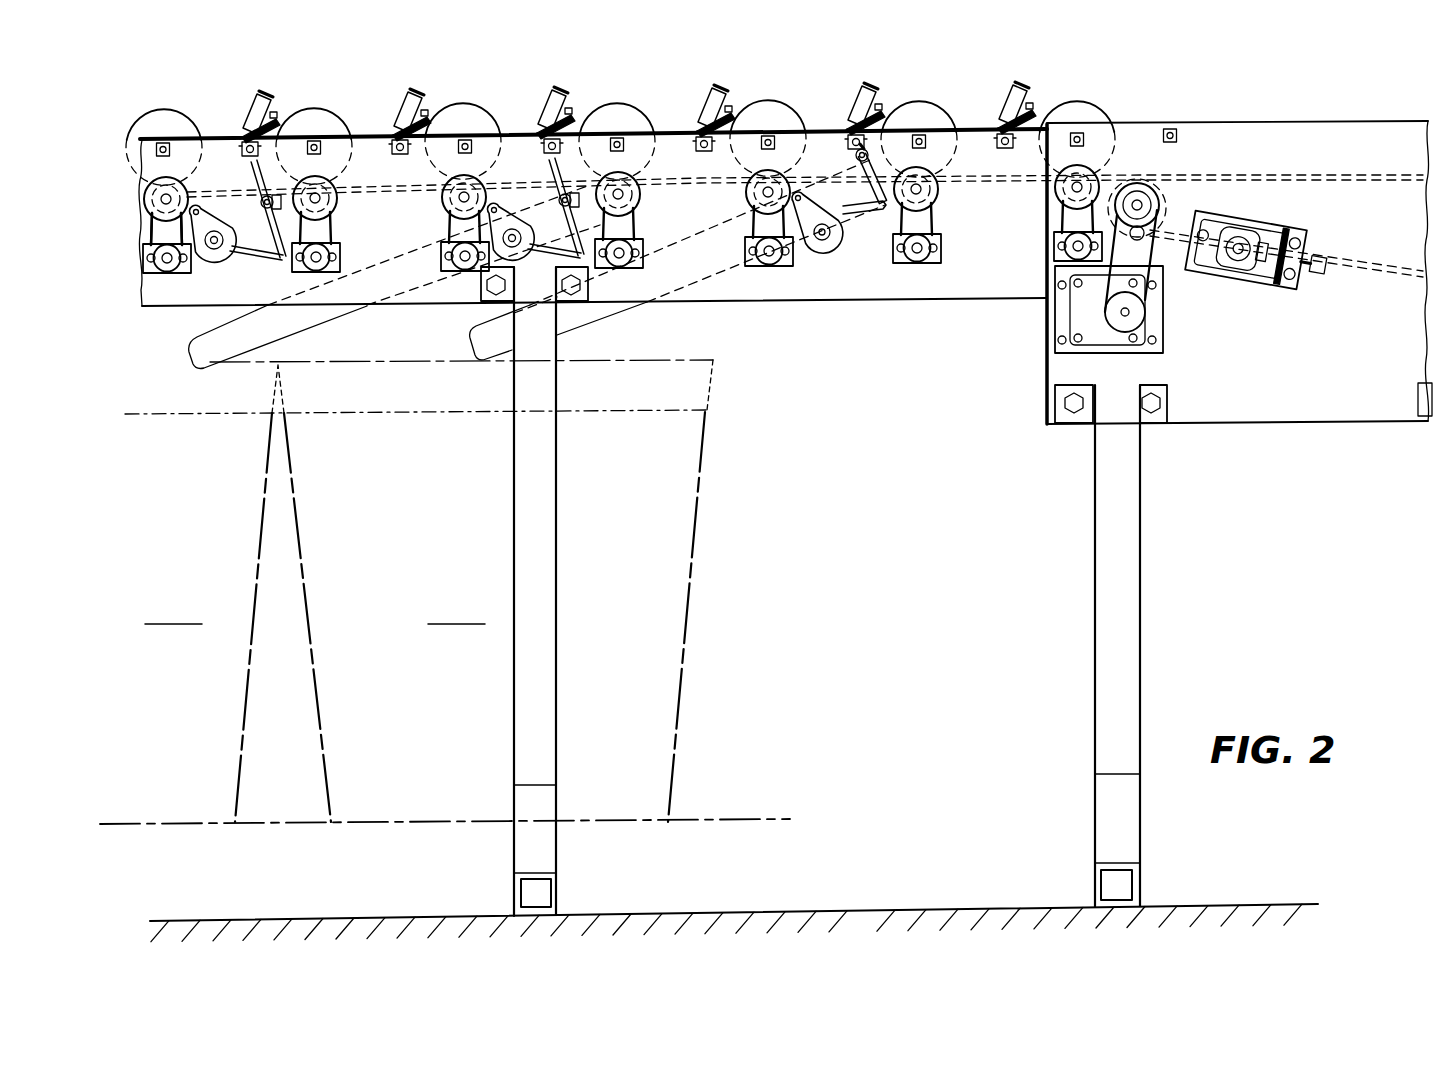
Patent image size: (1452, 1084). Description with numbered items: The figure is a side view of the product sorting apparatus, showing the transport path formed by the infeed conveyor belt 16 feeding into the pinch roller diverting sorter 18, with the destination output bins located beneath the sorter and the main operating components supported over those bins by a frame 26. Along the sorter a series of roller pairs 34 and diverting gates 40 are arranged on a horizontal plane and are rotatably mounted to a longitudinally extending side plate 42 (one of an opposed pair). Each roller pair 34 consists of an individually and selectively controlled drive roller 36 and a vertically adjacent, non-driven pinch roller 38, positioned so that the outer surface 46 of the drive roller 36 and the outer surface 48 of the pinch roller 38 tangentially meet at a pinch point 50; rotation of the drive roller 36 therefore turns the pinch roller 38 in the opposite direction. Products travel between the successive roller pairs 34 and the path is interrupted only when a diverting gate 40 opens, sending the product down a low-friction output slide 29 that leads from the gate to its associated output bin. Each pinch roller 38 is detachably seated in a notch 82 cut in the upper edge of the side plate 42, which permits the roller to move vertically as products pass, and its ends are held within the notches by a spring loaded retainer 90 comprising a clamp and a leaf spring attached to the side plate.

The infeed conveyor belt 16 is at (1371, 175).
The pinch roller diverting sorter 18 is at (957, 95).
The frame 26 is at (1136, 577).
The low-friction output slide 29 is at (580, 320).
The roller pair 34 is at (150, 102).
The drive roller 36 is at (140, 208).
The pinch roller 38 is at (143, 138).
The diverting gate 40 is at (158, 322).
The side plate 42 is at (1005, 292).
The outer surface of drive roller 46 is at (144, 228).
The outer surface of pinch roller 48 is at (168, 110).
The pinch point 50 is at (148, 177).
The notch 82 is at (474, 148).
The spring loaded retainer 90 is at (340, 137).